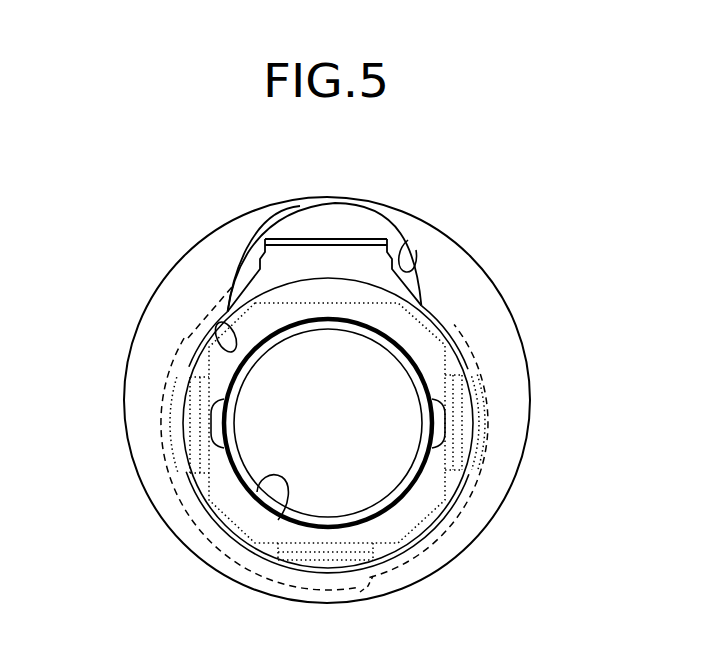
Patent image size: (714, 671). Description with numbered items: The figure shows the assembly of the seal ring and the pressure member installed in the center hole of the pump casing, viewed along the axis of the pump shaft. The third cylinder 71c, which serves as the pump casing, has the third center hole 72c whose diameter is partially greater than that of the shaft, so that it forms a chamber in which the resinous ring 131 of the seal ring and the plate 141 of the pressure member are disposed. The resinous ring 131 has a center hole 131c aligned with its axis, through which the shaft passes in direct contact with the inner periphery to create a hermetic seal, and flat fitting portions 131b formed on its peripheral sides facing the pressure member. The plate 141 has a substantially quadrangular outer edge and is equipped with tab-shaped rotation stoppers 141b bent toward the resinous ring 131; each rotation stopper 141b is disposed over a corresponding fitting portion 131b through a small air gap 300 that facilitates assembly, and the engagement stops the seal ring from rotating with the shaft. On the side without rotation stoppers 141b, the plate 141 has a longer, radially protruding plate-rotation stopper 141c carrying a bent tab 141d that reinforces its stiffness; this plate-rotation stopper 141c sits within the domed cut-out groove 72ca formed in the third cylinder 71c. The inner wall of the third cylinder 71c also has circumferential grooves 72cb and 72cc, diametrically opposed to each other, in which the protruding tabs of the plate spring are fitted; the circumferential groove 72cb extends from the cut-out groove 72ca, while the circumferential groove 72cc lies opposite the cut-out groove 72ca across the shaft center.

The third cylinder 71c is at (477, 302).
The third center hole 72c is at (218, 326).
The domed cut-out groove 72ca is at (408, 240).
The circumferential groove 72cb is at (187, 340).
The circumferential groove 72cc is at (360, 592).
The small air gap 300 is at (450, 507).
The plate 141 is at (368, 240).
The tab 141d is at (283, 238).
The plate-rotation stopper 141c is at (243, 268).
The rotation stopper 141b is at (465, 396).
The resinous ring 131 is at (263, 477).
The fitting portion 131b is at (465, 453).
The center hole 131c is at (278, 522).